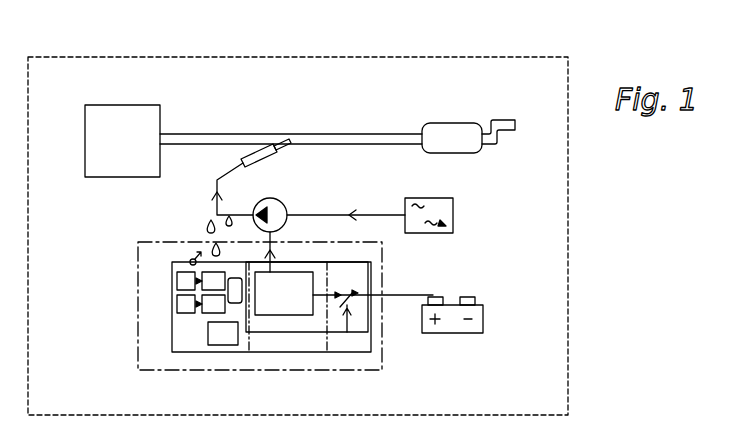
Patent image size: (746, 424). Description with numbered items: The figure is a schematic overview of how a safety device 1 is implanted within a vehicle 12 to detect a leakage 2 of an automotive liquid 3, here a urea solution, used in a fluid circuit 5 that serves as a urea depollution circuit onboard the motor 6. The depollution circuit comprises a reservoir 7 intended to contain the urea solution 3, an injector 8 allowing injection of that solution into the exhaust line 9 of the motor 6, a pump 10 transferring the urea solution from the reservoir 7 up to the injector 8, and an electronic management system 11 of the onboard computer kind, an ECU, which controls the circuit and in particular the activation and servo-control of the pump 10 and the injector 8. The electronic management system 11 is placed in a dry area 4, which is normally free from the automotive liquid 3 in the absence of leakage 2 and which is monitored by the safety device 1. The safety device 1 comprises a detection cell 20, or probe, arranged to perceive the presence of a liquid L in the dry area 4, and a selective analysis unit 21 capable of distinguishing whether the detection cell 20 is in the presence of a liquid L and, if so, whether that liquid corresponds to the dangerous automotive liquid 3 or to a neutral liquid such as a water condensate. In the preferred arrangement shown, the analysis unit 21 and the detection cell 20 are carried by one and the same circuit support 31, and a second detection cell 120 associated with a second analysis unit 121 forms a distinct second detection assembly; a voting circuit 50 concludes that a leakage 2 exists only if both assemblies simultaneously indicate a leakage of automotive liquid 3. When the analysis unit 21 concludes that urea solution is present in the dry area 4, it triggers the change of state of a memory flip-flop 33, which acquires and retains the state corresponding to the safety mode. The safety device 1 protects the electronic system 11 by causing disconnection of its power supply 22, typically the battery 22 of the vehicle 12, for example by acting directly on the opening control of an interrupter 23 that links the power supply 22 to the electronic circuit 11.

The safety device 1 is at (180, 333).
The leakage 2 is at (203, 227).
The automotive liquid 3 is at (453, 219).
The dry area 4 is at (382, 247).
The fluid circuit 5 is at (355, 188).
The motor 6 is at (112, 105).
The reservoir 7 is at (453, 202).
The injector 8 is at (272, 152).
The exhaust line 9 is at (382, 134).
The pump 10 is at (278, 203).
The electronic management system 11 is at (322, 279).
The vehicle 12 is at (467, 57).
The detection cell 20 is at (177, 280).
The selective analysis unit 21 is at (177, 303).
The power supply 22 is at (481, 328).
The interrupter 23 is at (353, 300).
The circuit support 31 is at (353, 352).
The memory flip-flop 33 is at (230, 345).
The voting circuit 50 is at (249, 335).
The second detection cell 120 is at (202, 304).
The second analysis unit 121 is at (202, 287).
The liquid L is at (170, 263).